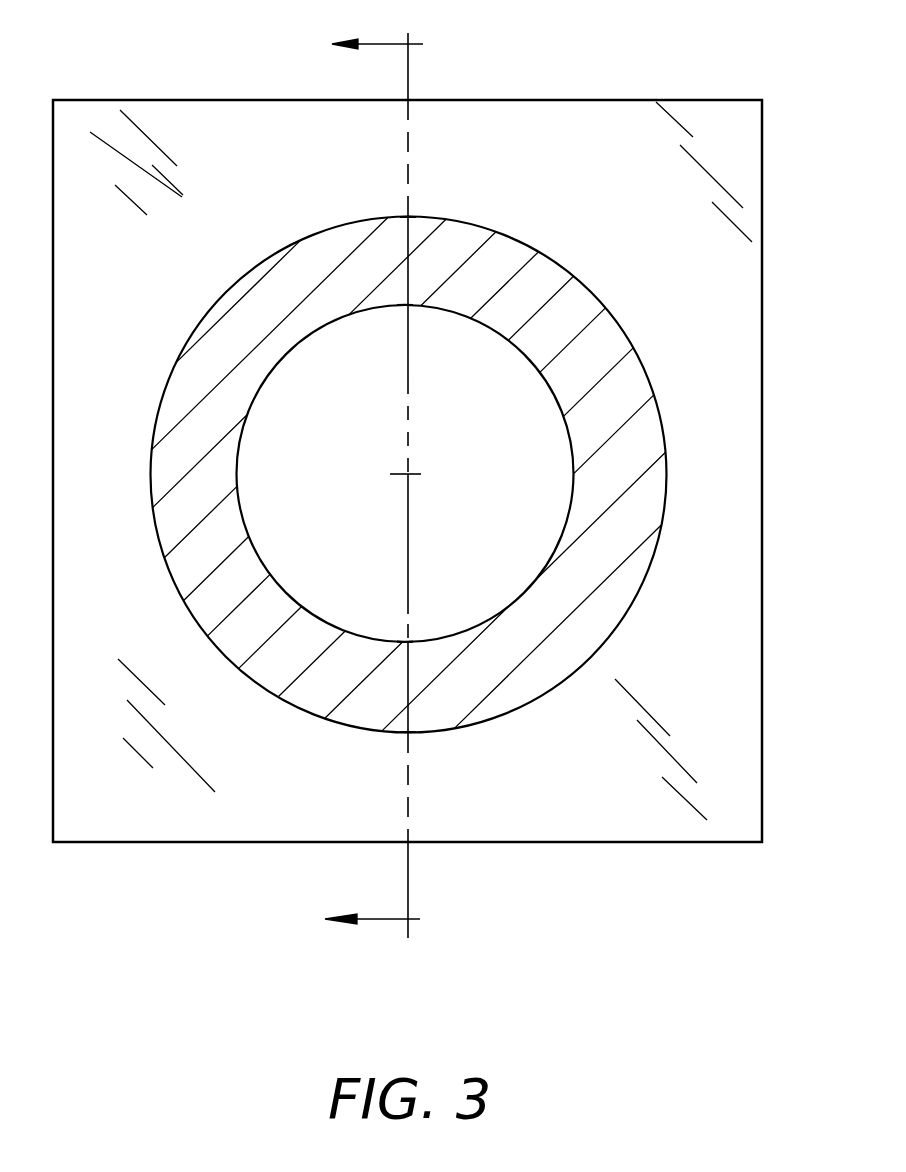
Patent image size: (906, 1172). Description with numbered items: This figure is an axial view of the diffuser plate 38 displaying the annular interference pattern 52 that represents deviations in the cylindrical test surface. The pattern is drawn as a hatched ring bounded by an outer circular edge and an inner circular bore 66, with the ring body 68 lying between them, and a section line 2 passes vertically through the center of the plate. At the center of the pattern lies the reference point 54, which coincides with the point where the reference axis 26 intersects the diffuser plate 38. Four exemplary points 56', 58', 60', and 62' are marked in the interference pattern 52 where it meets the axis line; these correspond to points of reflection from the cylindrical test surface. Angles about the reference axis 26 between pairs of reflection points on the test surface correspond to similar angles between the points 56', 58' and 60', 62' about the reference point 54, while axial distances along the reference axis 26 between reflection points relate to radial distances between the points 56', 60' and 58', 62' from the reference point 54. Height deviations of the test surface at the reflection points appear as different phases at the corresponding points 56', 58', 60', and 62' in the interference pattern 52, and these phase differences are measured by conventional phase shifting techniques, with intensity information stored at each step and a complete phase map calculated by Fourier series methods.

The section line 2- 2 is at (374, 483).
The diffuser plate 38 is at (648, 231).
The annular interference pattern 52 is at (203, 338).
The annular ring 68 is at (186, 605).
The inner circular bore 66 is at (240, 496).
The point in the interference pattern 58' is at (438, 196).
The point in the interference pattern 56' is at (437, 339).
The point in the interference pattern 60' is at (437, 608).
The point in the interference pattern 62' is at (450, 758).
The reference point 54 is at (447, 512).
The reference axis 26 is at (409, 477).